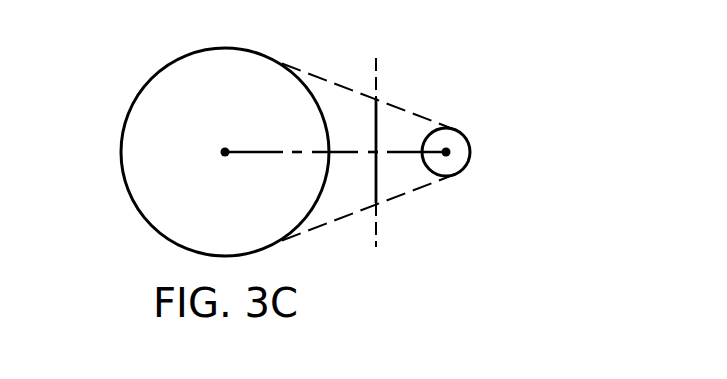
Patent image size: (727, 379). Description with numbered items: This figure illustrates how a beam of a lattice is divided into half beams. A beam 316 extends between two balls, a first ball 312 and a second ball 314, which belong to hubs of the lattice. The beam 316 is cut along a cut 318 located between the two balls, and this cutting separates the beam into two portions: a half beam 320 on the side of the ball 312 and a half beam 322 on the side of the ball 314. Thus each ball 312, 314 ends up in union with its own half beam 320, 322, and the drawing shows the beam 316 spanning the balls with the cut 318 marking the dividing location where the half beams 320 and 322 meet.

The ball 312 is at (122, 173).
The ball 314 is at (470, 158).
The beam 316 is at (347, 88).
The cut 318 is at (378, 185).
The half beam 320 is at (338, 203).
The half beam 322 is at (396, 116).